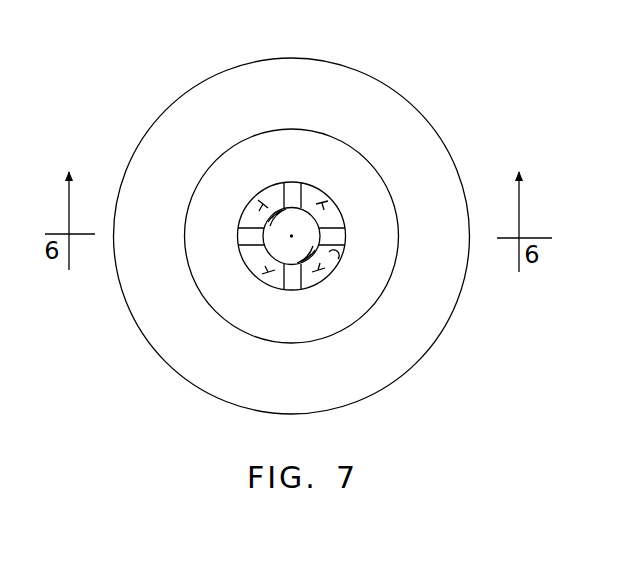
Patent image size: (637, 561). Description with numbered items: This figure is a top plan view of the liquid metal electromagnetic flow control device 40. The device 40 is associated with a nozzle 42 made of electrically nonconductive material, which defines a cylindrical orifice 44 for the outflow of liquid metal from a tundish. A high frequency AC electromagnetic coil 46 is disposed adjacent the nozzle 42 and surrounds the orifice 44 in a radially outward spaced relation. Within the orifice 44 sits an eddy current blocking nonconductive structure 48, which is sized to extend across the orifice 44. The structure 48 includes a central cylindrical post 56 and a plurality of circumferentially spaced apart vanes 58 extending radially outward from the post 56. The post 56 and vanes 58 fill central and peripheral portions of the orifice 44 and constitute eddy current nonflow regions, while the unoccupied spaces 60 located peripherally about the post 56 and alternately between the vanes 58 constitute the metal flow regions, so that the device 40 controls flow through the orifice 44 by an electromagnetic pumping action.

The electromagnetic flow control device 40 is at (437, 102).
The nozzle 42 is at (390, 213).
The cylindrical orifice 44 is at (333, 253).
The high frequency AC electromagnetic coil 46 is at (395, 108).
The eddy current blocking nonconductive structure 48 is at (280, 291).
The central cylindrical post 56 is at (280, 256).
The vanes 58 is at (295, 192).
The unoccupied spaces 60 is at (322, 203).